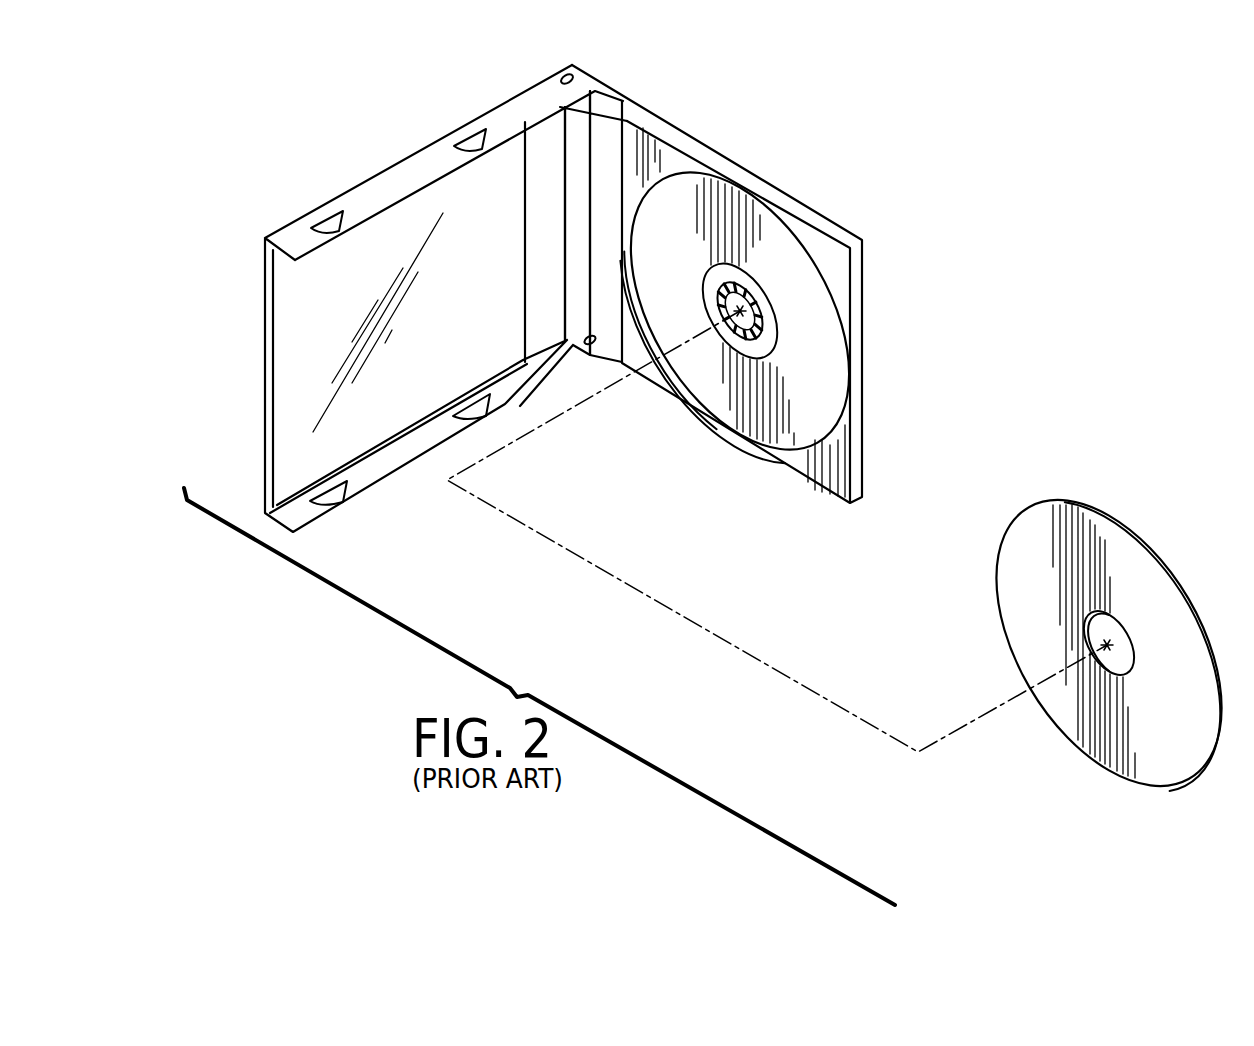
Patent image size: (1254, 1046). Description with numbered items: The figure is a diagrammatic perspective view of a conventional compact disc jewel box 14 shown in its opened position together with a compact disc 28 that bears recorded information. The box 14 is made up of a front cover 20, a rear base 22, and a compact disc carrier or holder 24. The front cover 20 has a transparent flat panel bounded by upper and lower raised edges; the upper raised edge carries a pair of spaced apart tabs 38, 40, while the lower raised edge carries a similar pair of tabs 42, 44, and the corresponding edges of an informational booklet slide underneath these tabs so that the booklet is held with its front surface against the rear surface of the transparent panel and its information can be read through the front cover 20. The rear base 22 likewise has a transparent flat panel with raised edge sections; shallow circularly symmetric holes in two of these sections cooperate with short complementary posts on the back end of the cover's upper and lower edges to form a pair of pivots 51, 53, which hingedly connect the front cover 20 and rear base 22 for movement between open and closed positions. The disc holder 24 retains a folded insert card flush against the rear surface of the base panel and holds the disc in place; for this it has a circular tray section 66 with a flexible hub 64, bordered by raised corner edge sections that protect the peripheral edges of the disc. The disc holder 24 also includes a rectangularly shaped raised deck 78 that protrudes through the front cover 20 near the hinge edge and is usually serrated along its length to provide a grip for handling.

The box 14 is at (828, 186).
The front cover 20 is at (258, 366).
The rear base 22 is at (686, 127).
The compact disc carrier or holder 24 is at (826, 260).
The compact disc 28 is at (1130, 518).
The tab 38 is at (334, 232).
The tab 40 is at (470, 148).
The tab 42 is at (330, 485).
The tab 44 is at (484, 398).
The pivot 51 is at (572, 74).
The pivot 53 is at (586, 339).
The flexible hub 64 is at (718, 294).
The circular tray section 66 is at (752, 206).
The raised deck 78 is at (581, 148).